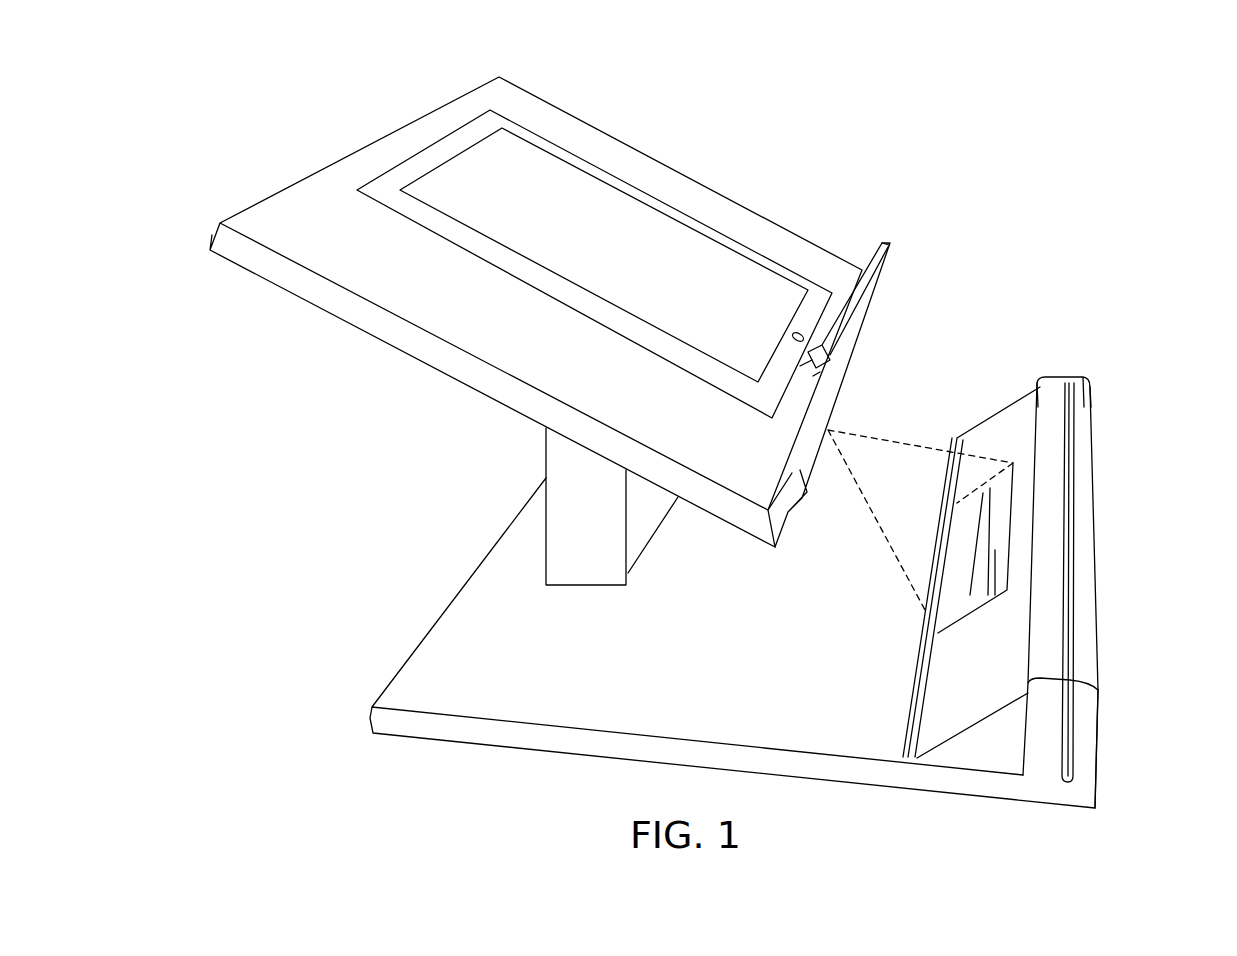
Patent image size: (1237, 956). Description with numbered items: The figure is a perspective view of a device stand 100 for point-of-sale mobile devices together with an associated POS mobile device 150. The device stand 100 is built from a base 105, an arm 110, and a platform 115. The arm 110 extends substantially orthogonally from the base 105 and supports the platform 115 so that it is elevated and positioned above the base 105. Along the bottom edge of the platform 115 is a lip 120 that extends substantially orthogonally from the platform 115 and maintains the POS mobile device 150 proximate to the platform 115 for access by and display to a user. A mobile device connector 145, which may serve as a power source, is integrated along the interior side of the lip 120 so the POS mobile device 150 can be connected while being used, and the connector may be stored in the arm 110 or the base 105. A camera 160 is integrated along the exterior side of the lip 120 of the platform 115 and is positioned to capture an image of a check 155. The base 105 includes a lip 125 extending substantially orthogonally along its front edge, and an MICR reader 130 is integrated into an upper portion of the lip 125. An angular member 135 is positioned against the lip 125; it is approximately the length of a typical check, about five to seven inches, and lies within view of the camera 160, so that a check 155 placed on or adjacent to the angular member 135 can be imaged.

The device stand 100 is at (1112, 70).
The base 105 is at (372, 706).
The arm 110 is at (546, 481).
The platform 115 is at (705, 185).
The lip 120 is at (788, 512).
The lip 125 is at (1090, 407).
The MICR reader 130 is at (1070, 392).
The angular member 135 is at (988, 650).
The mobile device connector 145 is at (889, 254).
The POS mobile device 150 is at (448, 138).
The check 155 is at (1013, 463).
The camera 160 is at (823, 437).